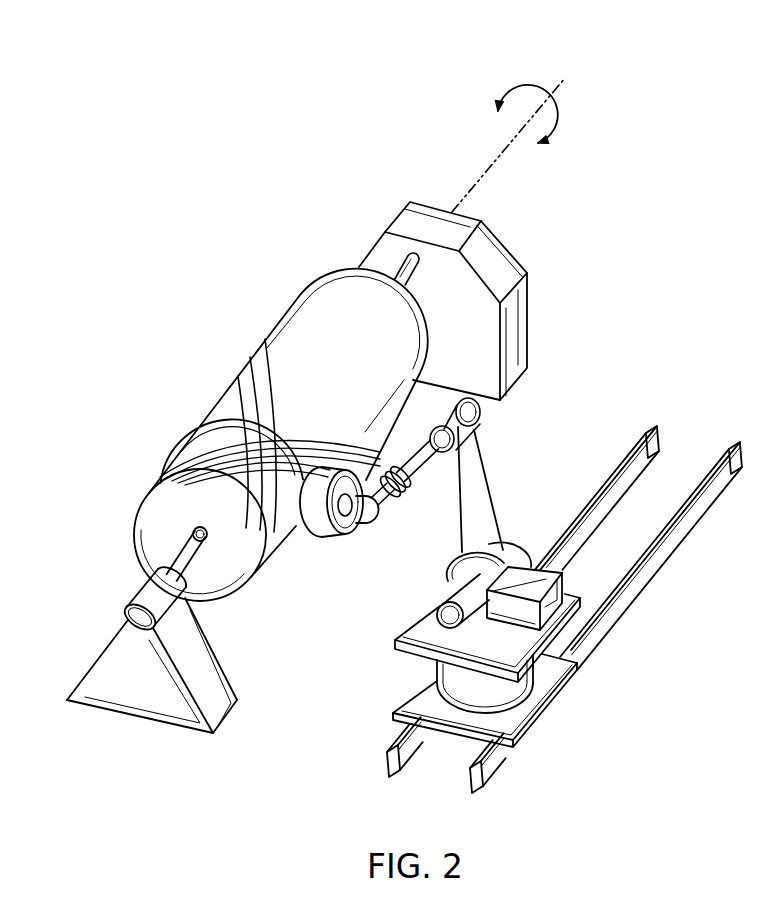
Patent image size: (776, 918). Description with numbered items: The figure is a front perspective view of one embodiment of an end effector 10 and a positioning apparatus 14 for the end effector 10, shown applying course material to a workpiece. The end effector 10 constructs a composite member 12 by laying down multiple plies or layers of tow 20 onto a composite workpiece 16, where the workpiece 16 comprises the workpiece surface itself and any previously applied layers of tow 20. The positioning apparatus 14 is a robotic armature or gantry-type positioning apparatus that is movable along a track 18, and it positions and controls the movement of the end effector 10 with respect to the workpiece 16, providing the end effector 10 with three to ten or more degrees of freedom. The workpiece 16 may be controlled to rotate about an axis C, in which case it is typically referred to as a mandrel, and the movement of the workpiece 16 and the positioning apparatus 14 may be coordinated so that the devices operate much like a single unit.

The end effector 10 is at (317, 528).
The composite member 12 is at (193, 455).
The positioning apparatus 14 is at (514, 515).
The composite workpiece 16 is at (365, 350).
The track 18 is at (710, 487).
The tow 20 is at (250, 384).
The axis C is at (557, 78).